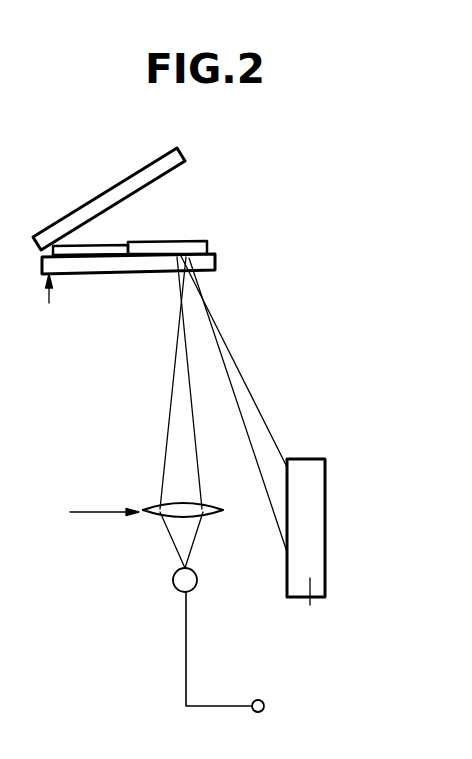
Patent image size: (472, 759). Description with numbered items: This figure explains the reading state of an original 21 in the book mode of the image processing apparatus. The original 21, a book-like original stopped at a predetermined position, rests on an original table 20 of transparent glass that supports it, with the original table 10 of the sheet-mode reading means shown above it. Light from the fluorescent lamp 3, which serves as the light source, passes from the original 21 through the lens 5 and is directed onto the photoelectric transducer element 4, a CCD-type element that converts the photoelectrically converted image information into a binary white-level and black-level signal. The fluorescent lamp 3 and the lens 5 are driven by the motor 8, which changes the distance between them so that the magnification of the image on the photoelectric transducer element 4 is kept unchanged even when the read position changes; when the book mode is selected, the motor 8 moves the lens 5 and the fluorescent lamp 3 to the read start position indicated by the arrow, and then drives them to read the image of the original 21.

The original table 10 is at (181, 153).
The original 21 is at (195, 241).
The original table 20 is at (213, 259).
The lens 5 is at (156, 518).
The fluorescent lamp 3 is at (197, 577).
The motor 8 is at (264, 701).
The photoelectric transducer element 4 is at (313, 474).